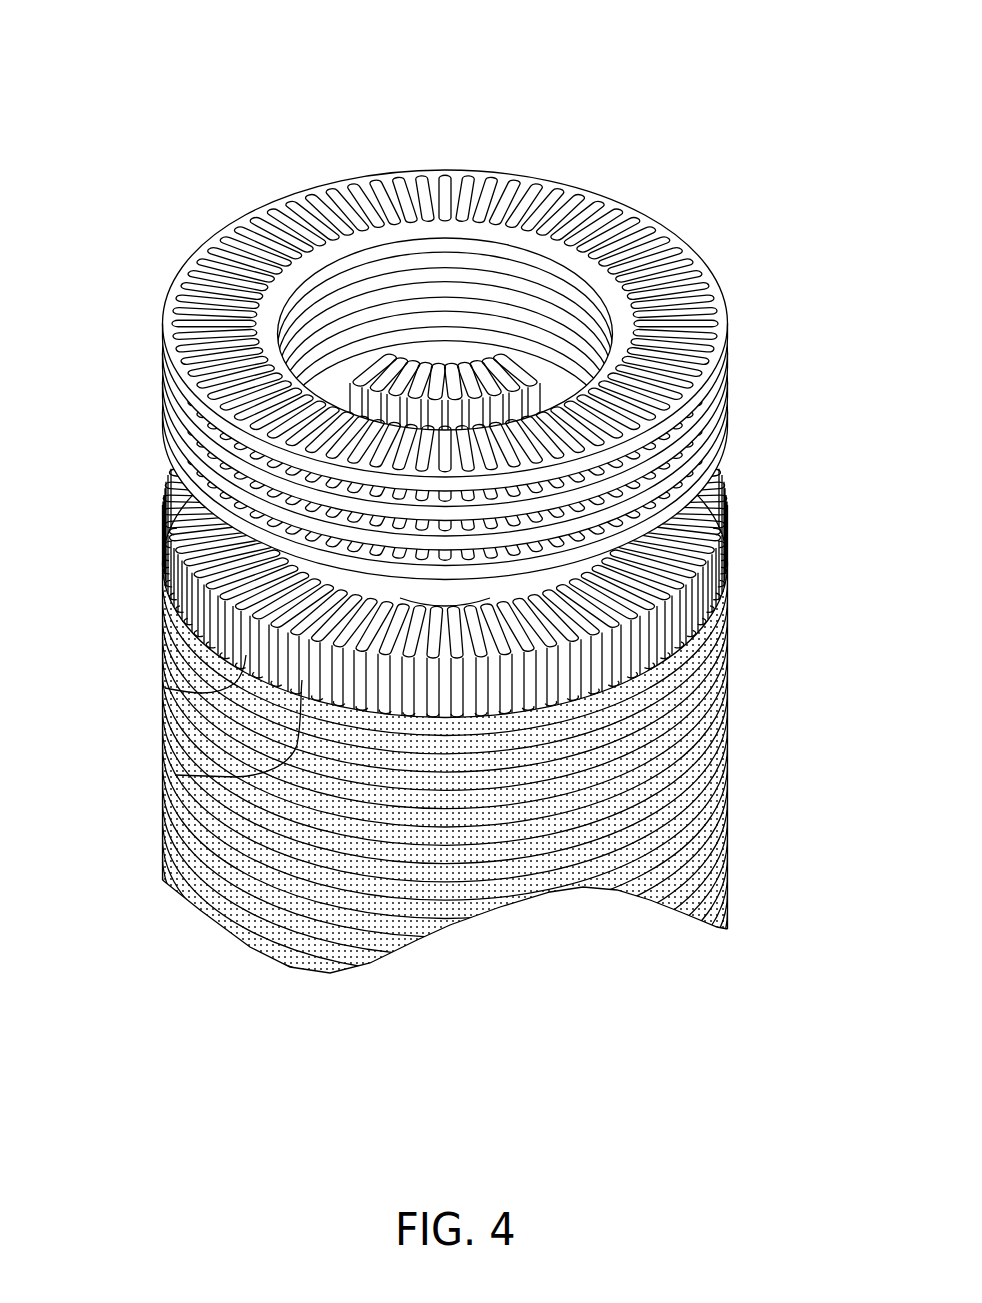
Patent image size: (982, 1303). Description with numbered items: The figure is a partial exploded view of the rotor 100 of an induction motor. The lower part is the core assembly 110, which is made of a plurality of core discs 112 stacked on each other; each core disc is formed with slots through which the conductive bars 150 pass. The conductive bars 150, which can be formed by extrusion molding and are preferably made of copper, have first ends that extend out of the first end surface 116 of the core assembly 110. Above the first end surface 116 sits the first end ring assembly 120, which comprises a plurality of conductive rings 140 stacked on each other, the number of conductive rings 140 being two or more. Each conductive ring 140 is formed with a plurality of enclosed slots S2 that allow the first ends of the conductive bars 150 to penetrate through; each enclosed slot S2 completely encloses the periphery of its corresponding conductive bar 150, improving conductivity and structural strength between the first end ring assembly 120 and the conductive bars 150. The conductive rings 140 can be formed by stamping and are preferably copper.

The rotor 100 is at (259, 74).
The core assembly 110 is at (509, 747).
The core discs 112 is at (700, 718).
The first end surface 116 is at (660, 670).
The first end ring assembly 120 is at (515, 354).
The conductive rings 140 is at (481, 354).
The conductive bars 150 is at (165, 688).
The enclosed slots S2 is at (679, 235).